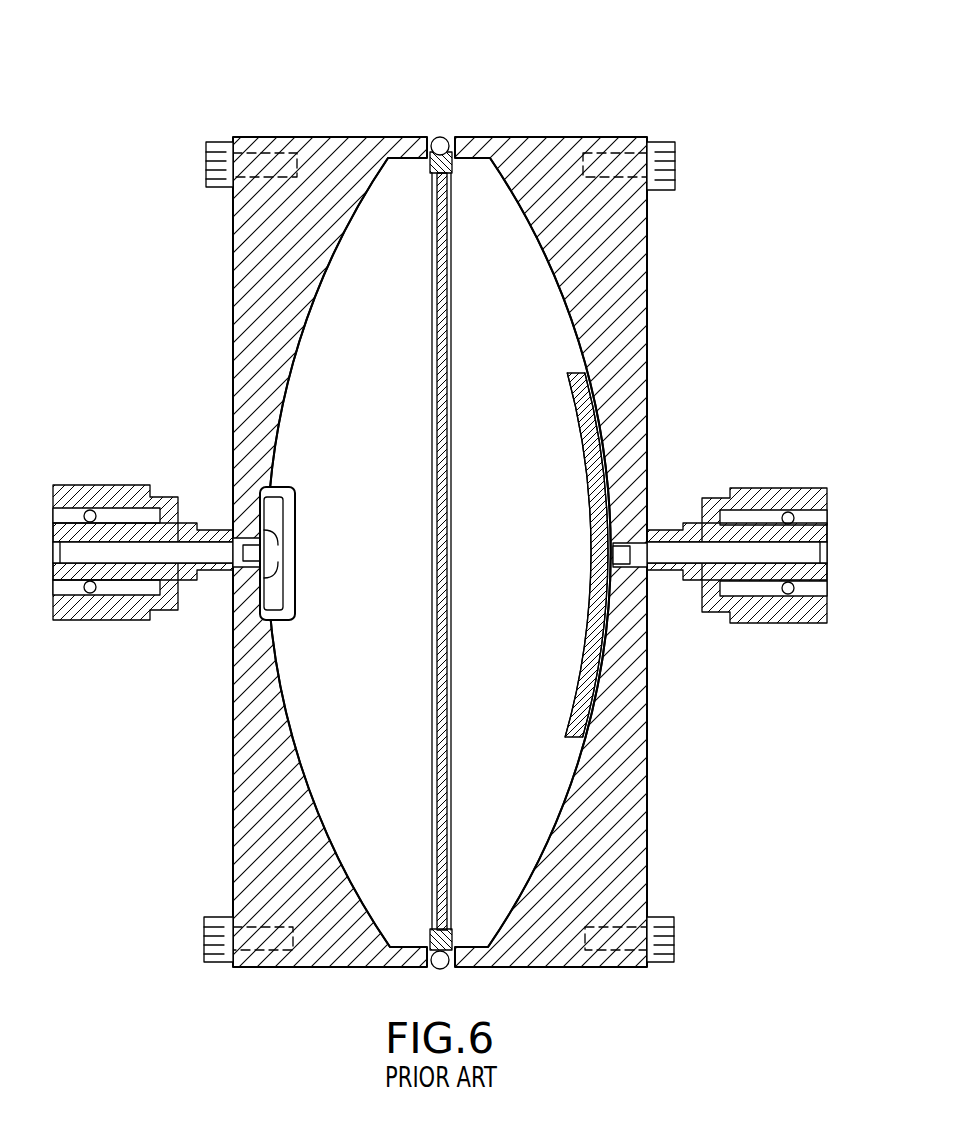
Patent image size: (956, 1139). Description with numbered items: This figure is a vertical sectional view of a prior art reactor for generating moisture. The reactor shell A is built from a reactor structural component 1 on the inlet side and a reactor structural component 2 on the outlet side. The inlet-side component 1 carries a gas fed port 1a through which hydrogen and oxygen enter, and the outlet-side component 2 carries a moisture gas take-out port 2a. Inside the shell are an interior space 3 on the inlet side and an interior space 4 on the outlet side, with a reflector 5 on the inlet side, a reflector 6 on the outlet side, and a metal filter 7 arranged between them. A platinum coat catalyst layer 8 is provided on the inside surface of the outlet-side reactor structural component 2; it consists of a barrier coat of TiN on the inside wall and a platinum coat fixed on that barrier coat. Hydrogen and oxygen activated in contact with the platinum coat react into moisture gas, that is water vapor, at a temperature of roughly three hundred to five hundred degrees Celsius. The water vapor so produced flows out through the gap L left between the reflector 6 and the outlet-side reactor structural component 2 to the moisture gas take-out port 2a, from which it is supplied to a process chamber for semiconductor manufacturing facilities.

The reactor structural component on an inlet side 1 is at (257, 316).
The gas fed port 1a is at (183, 553).
The reactor structural component on an outlet side 2 is at (618, 262).
The moisture gas take-out port 2a is at (675, 557).
The interior space on the inlet side 3 is at (373, 338).
The interior space on the outlet side 4 is at (505, 338).
The reflector on the inlet side 5 is at (296, 634).
The reflector on the outlet side 6 is at (575, 655).
The metal filter 7 is at (437, 660).
The platinum coat catalyst layer 8 is at (566, 322).
The gap L is at (602, 477).
The reactor shell A is at (640, 96).